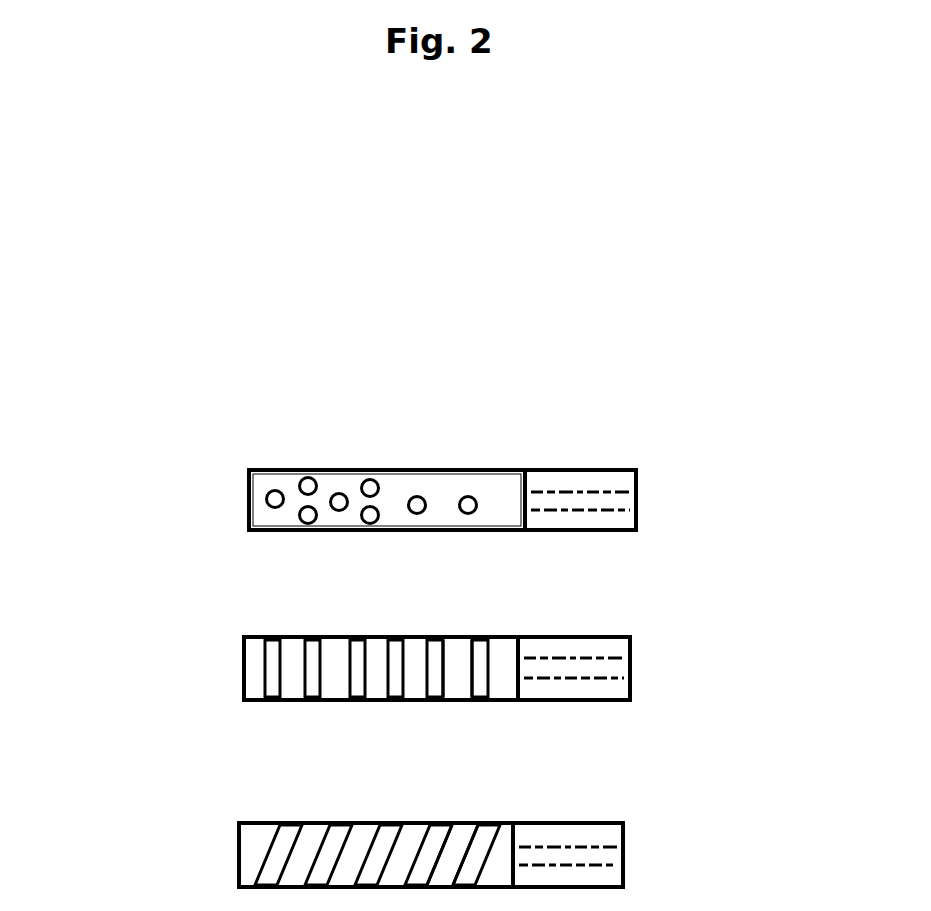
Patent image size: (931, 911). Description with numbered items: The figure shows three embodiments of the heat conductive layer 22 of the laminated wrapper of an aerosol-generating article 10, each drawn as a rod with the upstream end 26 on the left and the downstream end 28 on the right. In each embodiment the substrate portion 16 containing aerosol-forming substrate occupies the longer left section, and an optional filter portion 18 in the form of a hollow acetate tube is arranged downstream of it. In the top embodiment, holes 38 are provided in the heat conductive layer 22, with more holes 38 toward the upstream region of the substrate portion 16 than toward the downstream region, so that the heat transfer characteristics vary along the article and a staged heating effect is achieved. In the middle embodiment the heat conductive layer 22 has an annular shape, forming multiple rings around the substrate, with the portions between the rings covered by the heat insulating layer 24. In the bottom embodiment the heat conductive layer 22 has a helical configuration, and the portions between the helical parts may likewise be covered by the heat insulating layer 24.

The aerosol-generating article 10 is at (292, 426).
The substrate portion 16 is at (395, 480).
The filter portion 18 is at (608, 483).
The heat conductive layer 22 is at (393, 842).
The heat insulating layer 24 is at (436, 714).
The upstream end 26 is at (232, 493).
The downstream end 28 is at (653, 488).
The holes 38 is at (468, 496).